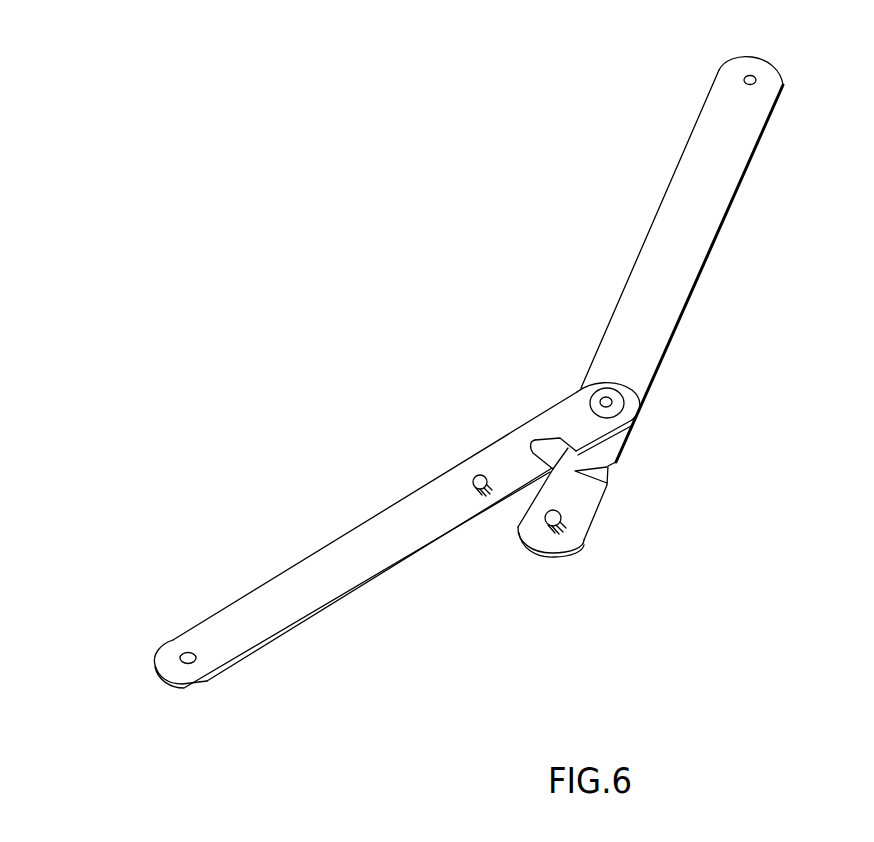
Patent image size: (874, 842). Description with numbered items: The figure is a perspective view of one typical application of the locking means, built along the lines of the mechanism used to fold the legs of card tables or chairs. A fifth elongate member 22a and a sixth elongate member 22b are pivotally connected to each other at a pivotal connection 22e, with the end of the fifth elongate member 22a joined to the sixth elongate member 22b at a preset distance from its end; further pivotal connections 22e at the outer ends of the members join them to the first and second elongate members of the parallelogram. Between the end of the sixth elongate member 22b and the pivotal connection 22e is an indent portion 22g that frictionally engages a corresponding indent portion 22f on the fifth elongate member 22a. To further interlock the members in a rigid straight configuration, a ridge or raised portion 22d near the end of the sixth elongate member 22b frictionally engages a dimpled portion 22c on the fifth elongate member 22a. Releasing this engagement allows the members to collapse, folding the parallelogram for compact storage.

The fifth elongate member 22a is at (330, 553).
The sixth elongate member 22b is at (771, 119).
The dimpled portion 22c is at (473, 477).
The raised portion 22d is at (562, 514).
The pivotal connection 22e is at (744, 81).
The indent portion 22f is at (568, 453).
The indent portion 22g is at (610, 467).